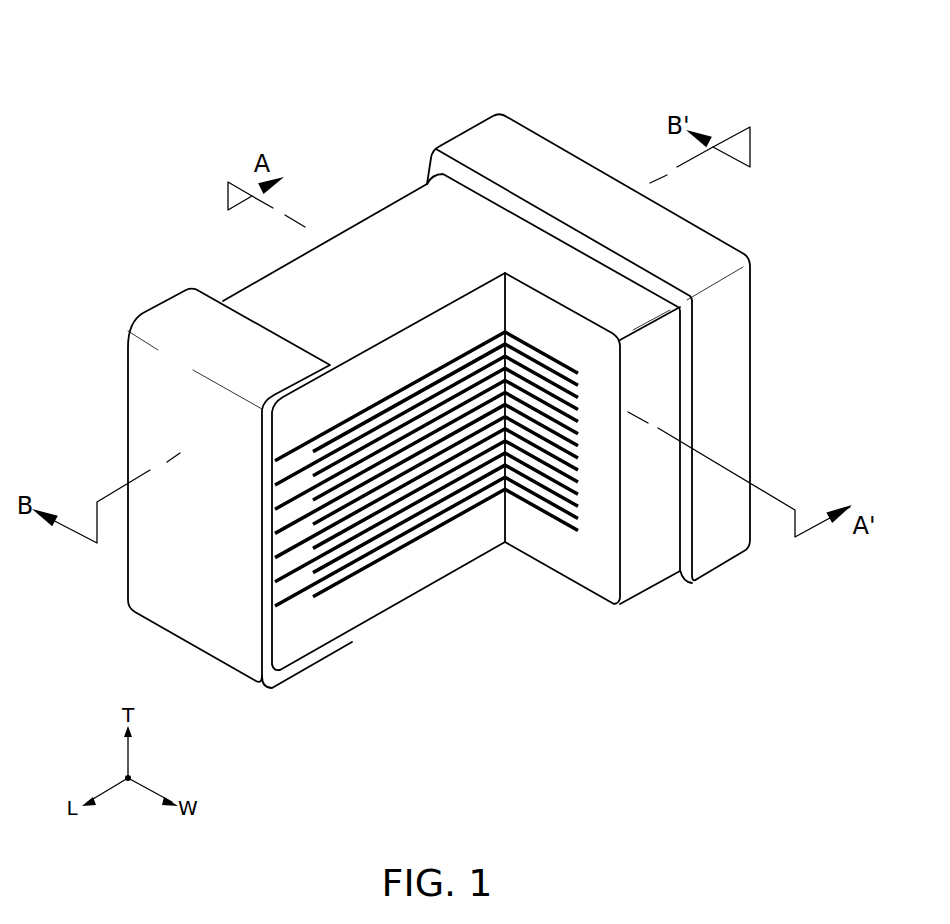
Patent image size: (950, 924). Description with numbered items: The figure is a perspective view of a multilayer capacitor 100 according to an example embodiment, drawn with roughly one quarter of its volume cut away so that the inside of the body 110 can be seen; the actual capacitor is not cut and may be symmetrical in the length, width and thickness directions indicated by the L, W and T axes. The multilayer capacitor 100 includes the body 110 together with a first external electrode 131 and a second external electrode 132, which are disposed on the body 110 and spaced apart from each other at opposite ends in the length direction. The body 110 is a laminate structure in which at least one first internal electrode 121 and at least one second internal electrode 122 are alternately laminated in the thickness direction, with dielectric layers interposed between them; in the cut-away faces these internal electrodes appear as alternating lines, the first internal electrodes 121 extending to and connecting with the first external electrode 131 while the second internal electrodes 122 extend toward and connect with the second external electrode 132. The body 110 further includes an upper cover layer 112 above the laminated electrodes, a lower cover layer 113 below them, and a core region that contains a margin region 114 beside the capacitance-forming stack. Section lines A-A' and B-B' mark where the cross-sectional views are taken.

The multilayer capacitor 100 is at (265, 21).
The body 110 is at (463, 213).
The upper cover layer 112 is at (407, 360).
The lower cover layer 113 is at (402, 580).
The margin region 114 is at (607, 533).
The first internal electrode 121 is at (287, 453).
The second internal electrode 122 is at (320, 593).
The first external electrode 131 is at (183, 330).
The second external electrode 132 is at (540, 152).